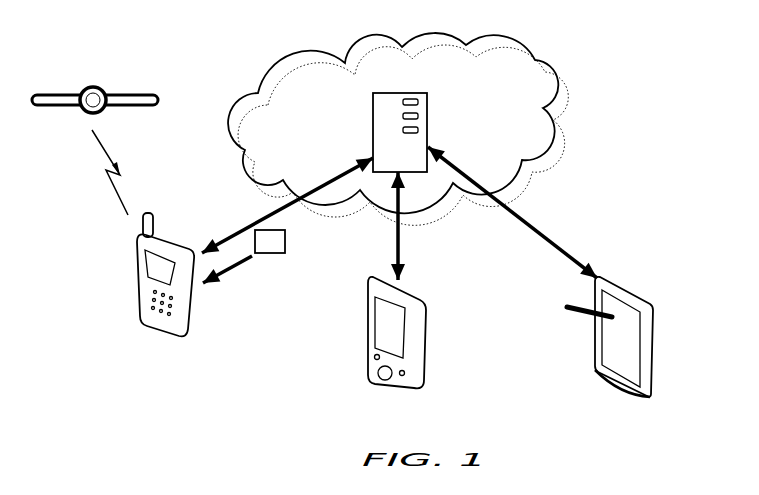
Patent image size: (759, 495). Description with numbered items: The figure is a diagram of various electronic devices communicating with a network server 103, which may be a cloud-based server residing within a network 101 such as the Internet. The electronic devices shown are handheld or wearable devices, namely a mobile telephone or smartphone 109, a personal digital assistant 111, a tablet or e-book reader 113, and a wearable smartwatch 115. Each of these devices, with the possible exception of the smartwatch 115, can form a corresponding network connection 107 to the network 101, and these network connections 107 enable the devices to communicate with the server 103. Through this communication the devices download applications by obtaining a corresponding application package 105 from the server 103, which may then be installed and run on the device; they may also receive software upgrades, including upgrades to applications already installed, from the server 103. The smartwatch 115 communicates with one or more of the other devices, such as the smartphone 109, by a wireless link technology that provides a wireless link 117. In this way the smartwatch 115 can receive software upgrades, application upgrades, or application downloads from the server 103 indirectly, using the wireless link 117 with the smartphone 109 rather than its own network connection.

The network 101 is at (494, 108).
The network server 103 is at (373, 130).
The application package 105 is at (277, 255).
The network connection 107 is at (245, 222).
The mobile telephone or smartphone 109 is at (192, 315).
The personal digital assistant (PDA) 111 is at (423, 358).
The tablet or e-book reader 113 is at (653, 378).
The smartwatch 115 is at (105, 112).
The wireless link 117 is at (104, 172).